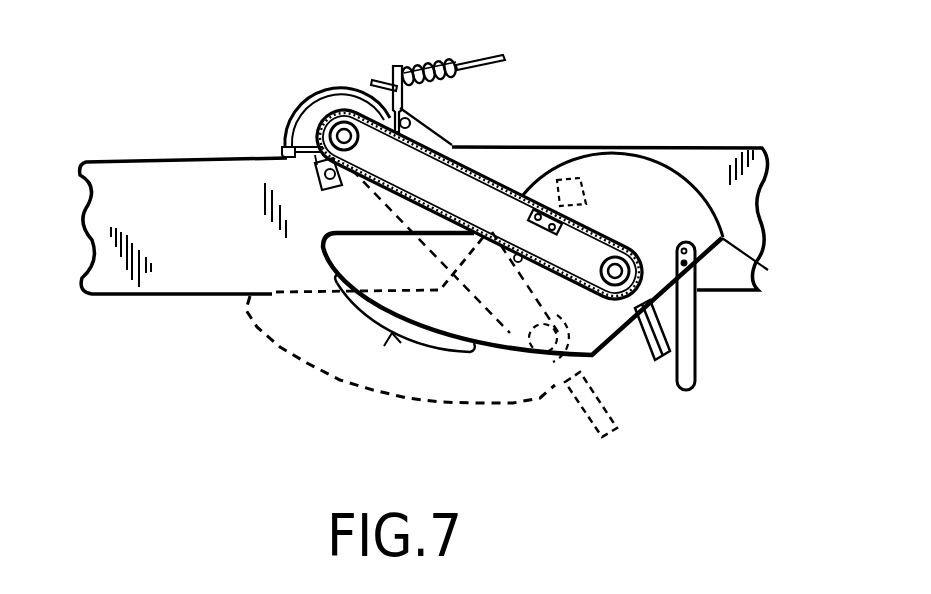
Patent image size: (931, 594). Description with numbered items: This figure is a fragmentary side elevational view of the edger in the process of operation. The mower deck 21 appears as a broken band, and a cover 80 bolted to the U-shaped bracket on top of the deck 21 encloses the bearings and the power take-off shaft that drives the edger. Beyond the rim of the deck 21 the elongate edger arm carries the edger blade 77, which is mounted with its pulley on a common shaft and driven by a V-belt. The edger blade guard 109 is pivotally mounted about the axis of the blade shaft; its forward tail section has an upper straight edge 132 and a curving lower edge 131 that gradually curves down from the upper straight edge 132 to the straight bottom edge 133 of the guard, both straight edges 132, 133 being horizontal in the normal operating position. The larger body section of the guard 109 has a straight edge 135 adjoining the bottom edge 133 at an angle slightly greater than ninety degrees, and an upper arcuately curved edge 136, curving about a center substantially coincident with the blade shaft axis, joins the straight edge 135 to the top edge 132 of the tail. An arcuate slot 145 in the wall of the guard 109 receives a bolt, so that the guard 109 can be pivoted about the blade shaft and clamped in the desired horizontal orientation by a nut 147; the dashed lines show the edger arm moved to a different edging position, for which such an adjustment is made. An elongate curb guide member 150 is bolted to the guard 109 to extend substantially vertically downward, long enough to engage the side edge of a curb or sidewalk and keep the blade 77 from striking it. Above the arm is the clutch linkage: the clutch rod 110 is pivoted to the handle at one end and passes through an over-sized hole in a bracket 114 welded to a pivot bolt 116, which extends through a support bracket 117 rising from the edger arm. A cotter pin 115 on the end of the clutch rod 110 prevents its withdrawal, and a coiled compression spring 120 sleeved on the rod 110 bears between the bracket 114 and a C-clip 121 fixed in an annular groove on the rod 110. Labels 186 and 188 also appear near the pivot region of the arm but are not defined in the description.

The deck 21 is at (188, 160).
The edger blade 77 is at (647, 340).
The cover 80 is at (297, 112).
The edger blade guard 109 is at (473, 322).
The clutch rod 110 is at (508, 56).
The bracket 114 is at (395, 72).
The cotter pin 115 is at (377, 80).
The pivot bolt 116 is at (465, 127).
The support bracket 117 is at (412, 126).
The coiled compression spring 120 is at (432, 77).
The C-clip 121 is at (452, 63).
The curving lower edge 131 is at (405, 320).
The upper straight edge 132 is at (384, 234).
The straight bottom edge 133 is at (563, 348).
The straight edge 135 is at (763, 265).
The upper arcuately curved edge 136 is at (668, 167).
The arcuate slot 145 is at (575, 203).
The nut 147 is at (593, 227).
The curb guide member 150 is at (697, 350).
The mounting bracket 186 is at (314, 170).
The bolt 188 is at (327, 191).